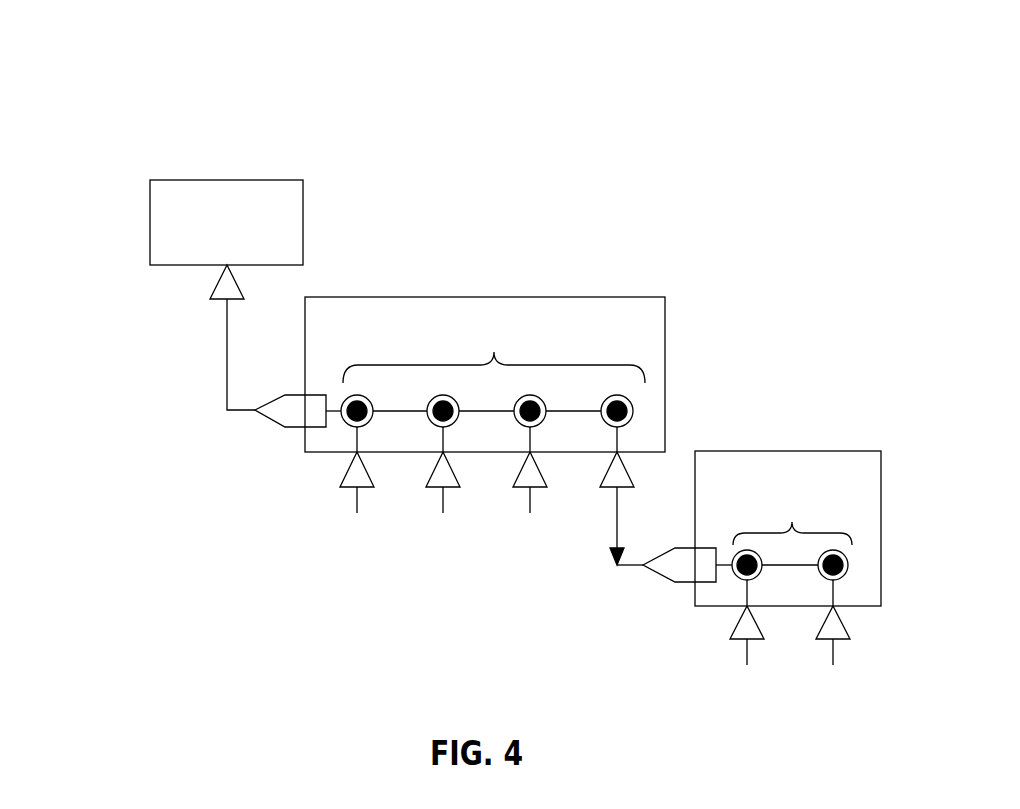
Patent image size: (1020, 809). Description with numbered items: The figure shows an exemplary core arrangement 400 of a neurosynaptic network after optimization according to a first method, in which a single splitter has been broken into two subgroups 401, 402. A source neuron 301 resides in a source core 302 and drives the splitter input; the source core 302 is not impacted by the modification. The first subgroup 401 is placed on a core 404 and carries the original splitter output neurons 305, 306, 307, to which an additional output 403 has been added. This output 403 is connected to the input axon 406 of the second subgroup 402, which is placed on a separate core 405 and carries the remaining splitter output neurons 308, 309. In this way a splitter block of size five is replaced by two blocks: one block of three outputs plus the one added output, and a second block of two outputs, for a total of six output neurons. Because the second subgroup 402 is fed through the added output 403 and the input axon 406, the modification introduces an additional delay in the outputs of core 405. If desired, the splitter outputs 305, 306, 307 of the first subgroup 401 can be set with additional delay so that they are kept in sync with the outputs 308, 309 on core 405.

The core arrangement 400 is at (498, 35).
The source core 302 is at (273, 180).
The source neuron 301 is at (217, 283).
The core 404 is at (640, 297).
The first subgroup 401 is at (494, 362).
The splitter output neuron 305 is at (357, 474).
The splitter output neuron 306 is at (443, 474).
The splitter output neuron 307 is at (530, 474).
The output 403 is at (603, 473).
The input axon 406 is at (662, 577).
The core 405 is at (815, 451).
The second subgroup 402 is at (792, 529).
The splitter output neuron 308 is at (747, 629).
The splitter output neuron 309 is at (833, 629).